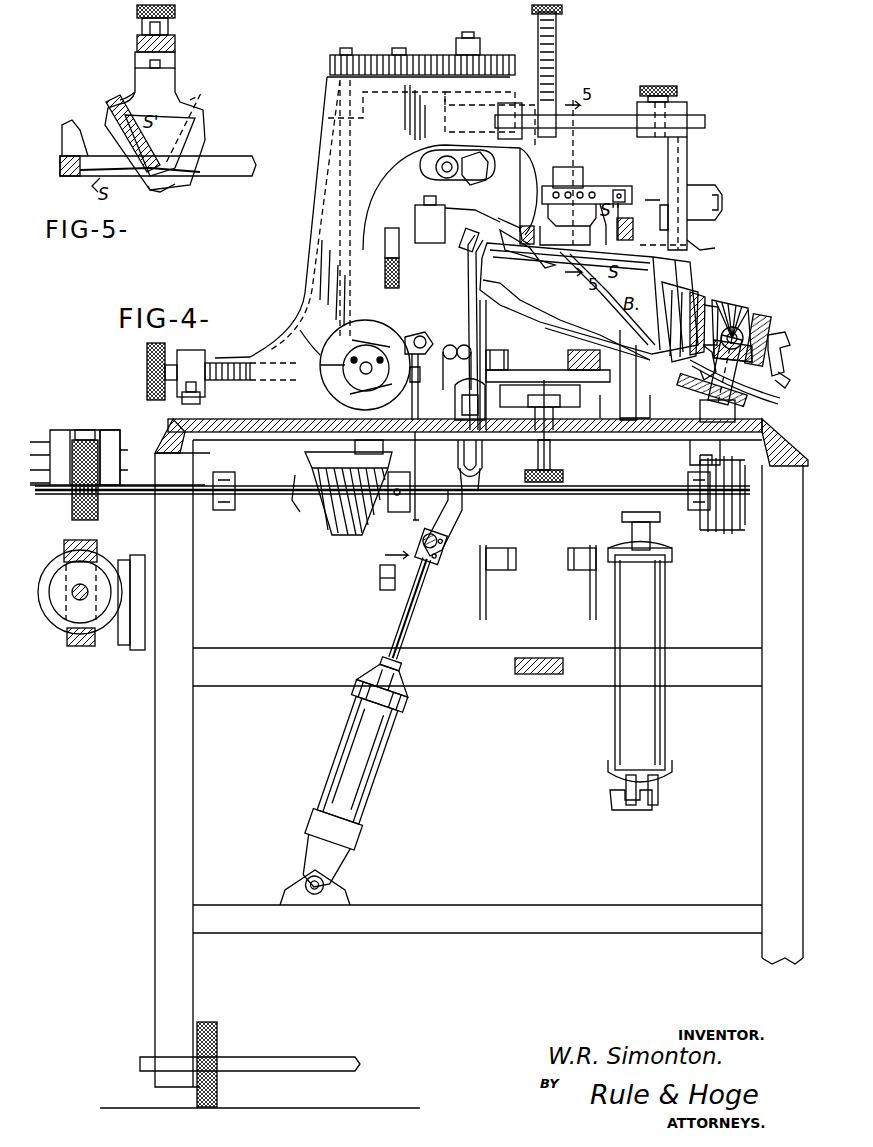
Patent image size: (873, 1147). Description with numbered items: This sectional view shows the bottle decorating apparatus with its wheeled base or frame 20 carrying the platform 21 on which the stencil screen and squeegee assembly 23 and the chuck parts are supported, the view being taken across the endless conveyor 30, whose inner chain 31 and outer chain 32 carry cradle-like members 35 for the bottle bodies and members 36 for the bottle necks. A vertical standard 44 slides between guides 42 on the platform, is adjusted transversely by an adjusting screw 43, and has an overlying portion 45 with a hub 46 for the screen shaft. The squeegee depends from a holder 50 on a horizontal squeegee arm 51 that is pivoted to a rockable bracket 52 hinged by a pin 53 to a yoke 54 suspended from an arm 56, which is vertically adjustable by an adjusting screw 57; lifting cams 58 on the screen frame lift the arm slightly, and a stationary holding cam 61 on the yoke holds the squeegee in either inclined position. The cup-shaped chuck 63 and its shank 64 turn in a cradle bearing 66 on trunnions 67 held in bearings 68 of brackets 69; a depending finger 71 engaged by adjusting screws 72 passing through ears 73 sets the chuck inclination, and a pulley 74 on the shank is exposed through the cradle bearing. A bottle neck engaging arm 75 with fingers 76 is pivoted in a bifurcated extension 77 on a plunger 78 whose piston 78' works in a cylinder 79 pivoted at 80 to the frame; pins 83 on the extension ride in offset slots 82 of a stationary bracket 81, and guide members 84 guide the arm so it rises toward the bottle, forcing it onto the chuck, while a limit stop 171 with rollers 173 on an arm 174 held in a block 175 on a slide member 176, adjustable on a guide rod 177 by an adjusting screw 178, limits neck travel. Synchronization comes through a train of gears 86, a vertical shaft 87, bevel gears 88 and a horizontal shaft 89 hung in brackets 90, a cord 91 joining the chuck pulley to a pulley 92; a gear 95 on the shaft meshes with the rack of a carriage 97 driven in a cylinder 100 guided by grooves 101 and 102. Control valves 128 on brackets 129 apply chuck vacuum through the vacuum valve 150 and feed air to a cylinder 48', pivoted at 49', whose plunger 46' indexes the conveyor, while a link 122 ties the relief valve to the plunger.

In FIG. 4, the wheeled base 20 is at (193, 632).
In FIG. 4, the platform 21 is at (170, 426).
In FIG. 4, the stencil screen and squeegee assembly 23 is at (799, 320).
In FIG. 4, the endless conveyor 30 is at (568, 548).
In FIG. 4, the inner endless chain 31 is at (512, 356).
In FIG. 4, the outer endless chain 32 is at (548, 362).
In FIG. 4, the cradle-like members 35 is at (602, 355).
In FIG. 4, the cradle-like members 36 is at (488, 335).
In FIG. 4, the guides 42 is at (210, 394).
In FIG. 4, the adjusting screw 43 is at (225, 355).
In FIG. 4, the vertical standard 44 is at (312, 225).
In FIG. 4, the overlying portion 45 is at (445, 55).
In FIG. 4, the hub 46 is at (466, 112).
In FIG. 4, the plunger 46' is at (622, 530).
In FIG. 4, the cylinder 48' is at (658, 662).
In FIG. 4, the pivot 49' is at (663, 789).
In FIG. 5, the holder 50 is at (112, 100).
In FIG. 4, the holder 50 is at (583, 178).
In FIG. 5, the squeegee arm 51 is at (136, 92).
In FIG. 4, the squeegee arm 51 is at (618, 188).
In FIG. 4, the rockable bracket 52 is at (722, 212).
In FIG. 5, the hinge pin 53 is at (160, 185).
In FIG. 4, the hinge pin 53 is at (690, 248).
In FIG. 5, the yoke 54 is at (170, 82).
In FIG. 4, the yoke 54 is at (715, 248).
In FIG. 5, the arm 56 is at (175, 45).
In FIG. 4, the arm 56 is at (705, 121).
In FIG. 4, the adjusting screw 57 is at (556, 40).
In FIG. 5, the lifting cams 58 is at (70, 122).
In FIG. 4, the lifting cams 58 is at (638, 180).
In FIG. 4, the holding cam 61 is at (687, 200).
In FIG. 4, the chuck 63 is at (690, 280).
In FIG. 4, the shank 64 is at (704, 360).
In FIG. 4, the cradle bearing 66 is at (738, 305).
In FIG. 4, the trunnions 67 is at (752, 320).
In FIG. 4, the bearings 68 is at (775, 342).
In FIG. 4, the brackets 69 is at (745, 388).
In FIG. 4, the depending finger 71 is at (791, 384).
In FIG. 4, the adjusting screws 72 is at (680, 384).
In FIG. 4, the ears 73 is at (700, 412).
In FIG. 4, the pulley 74 is at (742, 303).
In FIG. 4, the bottle neck engaging arm 75 is at (462, 295).
In FIG. 4, the fingers 76 is at (485, 290).
In FIG. 4, the bifurcated extension 77 is at (458, 518).
In FIG. 4, the plunger 78 is at (418, 595).
In FIG. 4, the piston 78' is at (394, 705).
In FIG. 4, the cylinder 79 is at (372, 800).
In FIG. 4, the pivot 80 is at (328, 882).
In FIG. 4, the stationary bracket 81 is at (478, 485).
In FIG. 4, the slots 82 is at (482, 458).
In FIG. 4, the pins 83 is at (495, 405).
In FIG. 4, the guide members 84 is at (445, 378).
In FIG. 4, the train of gears 86 is at (430, 55).
In FIG. 4, the vertical shaft 87 is at (345, 110).
In FIG. 4, the bevel gears 88 is at (360, 520).
In FIG. 4, the horizontal shaft 89 is at (287, 503).
In FIG. 4, the brackets 90 is at (212, 474).
In FIG. 4, the cord 91 is at (720, 455).
In FIG. 4, the pulley 92 is at (740, 530).
In FIG. 4, the gear 95 is at (100, 428).
In FIG. 4, the carriage 97 is at (80, 660).
In FIG. 4, the cylinder 100 is at (55, 620).
In FIG. 4, the upper groove 101 is at (64, 550).
In FIG. 4, the lower groove 102 is at (95, 640).
In FIG. 4, the link 122 is at (410, 447).
In FIG. 4, the control valves 128 is at (68, 430).
In FIG. 4, the brackets 129 is at (98, 512).
In FIG. 4, the vacuum valve 150 is at (328, 358).
In FIG. 4, the limit stop 171 is at (525, 180).
In FIG. 4, the rollers 173 is at (527, 250).
In FIG. 4, the arm 174 is at (508, 225).
In FIG. 4, the block 175 is at (455, 225).
In FIG. 4, the slide member 176 is at (413, 258).
In FIG. 4, the guide rod 177 is at (400, 225).
In FIG. 4, the adjusting screw 178 is at (365, 365).